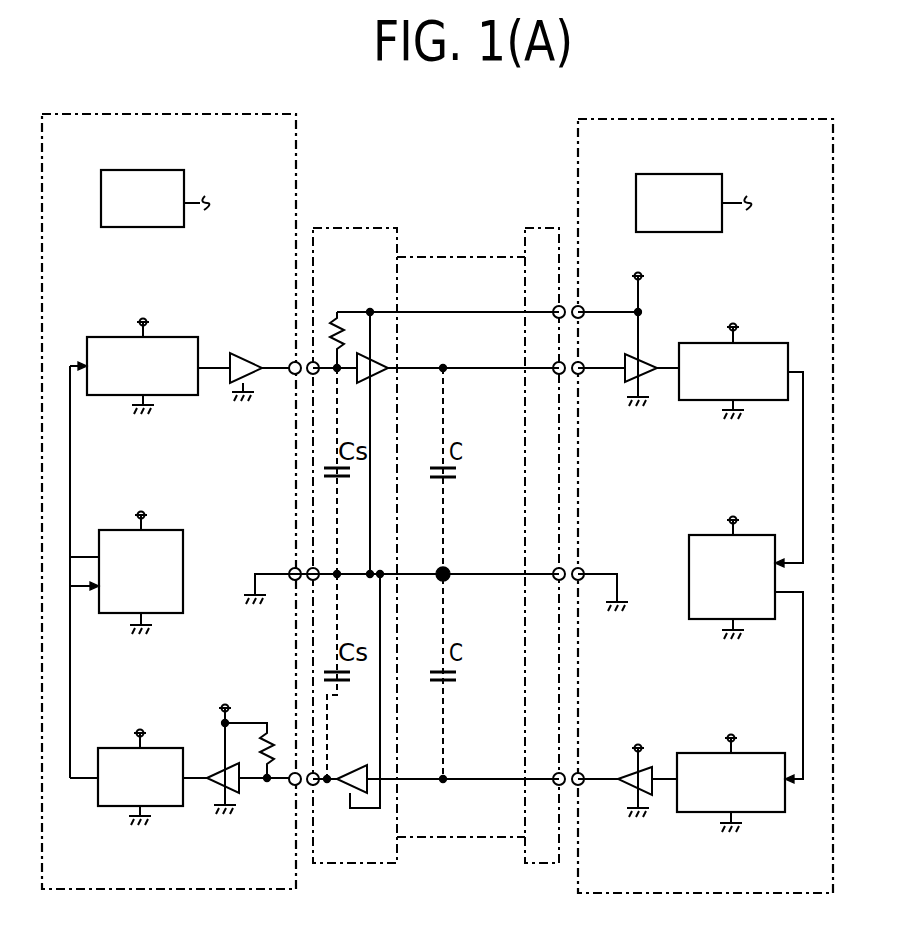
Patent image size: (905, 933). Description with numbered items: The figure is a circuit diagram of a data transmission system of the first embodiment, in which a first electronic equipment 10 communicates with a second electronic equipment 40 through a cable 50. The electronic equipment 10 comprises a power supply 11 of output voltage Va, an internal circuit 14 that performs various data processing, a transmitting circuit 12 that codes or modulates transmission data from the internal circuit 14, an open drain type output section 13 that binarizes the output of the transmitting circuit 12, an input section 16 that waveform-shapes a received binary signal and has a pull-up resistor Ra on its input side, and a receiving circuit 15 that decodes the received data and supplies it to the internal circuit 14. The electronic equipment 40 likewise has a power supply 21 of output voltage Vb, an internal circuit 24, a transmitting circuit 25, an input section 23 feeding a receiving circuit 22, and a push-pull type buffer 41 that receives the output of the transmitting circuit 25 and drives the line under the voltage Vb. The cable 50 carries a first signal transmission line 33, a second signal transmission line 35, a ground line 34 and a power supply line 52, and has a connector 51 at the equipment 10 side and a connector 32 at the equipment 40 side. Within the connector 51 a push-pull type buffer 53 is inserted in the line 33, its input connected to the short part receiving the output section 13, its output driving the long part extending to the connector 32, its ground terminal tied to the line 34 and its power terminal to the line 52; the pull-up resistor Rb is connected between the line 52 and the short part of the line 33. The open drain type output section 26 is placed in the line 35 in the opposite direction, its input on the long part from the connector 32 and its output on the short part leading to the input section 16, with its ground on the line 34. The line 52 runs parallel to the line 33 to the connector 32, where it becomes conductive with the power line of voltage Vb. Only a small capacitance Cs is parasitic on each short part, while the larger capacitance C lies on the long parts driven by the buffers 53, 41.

The electronic equipment 10 is at (296, 128).
The power supply 11 is at (138, 170).
The transmitting circuit 12 is at (108, 395).
The output section 13 is at (220, 392).
The internal circuit 14 is at (183, 557).
The receiving circuit 15 is at (115, 806).
The input section 16 is at (217, 795).
The power supply 21 is at (676, 174).
The receiving circuit 22 is at (760, 400).
The input section 23 is at (626, 388).
The internal circuit 24 is at (689, 556).
The transmitting circuit 25 is at (710, 753).
The output section 26 is at (350, 765).
The connector 32 is at (543, 228).
The line 33 is at (493, 372).
The ground line 34 is at (485, 574).
The line 35 is at (485, 779).
The electronic equipment 40 is at (578, 130).
The buffer 41 is at (622, 775).
The cable 50 is at (455, 257).
The connector 51 is at (357, 228).
The line 52 is at (428, 312).
The buffer 53 is at (378, 353).